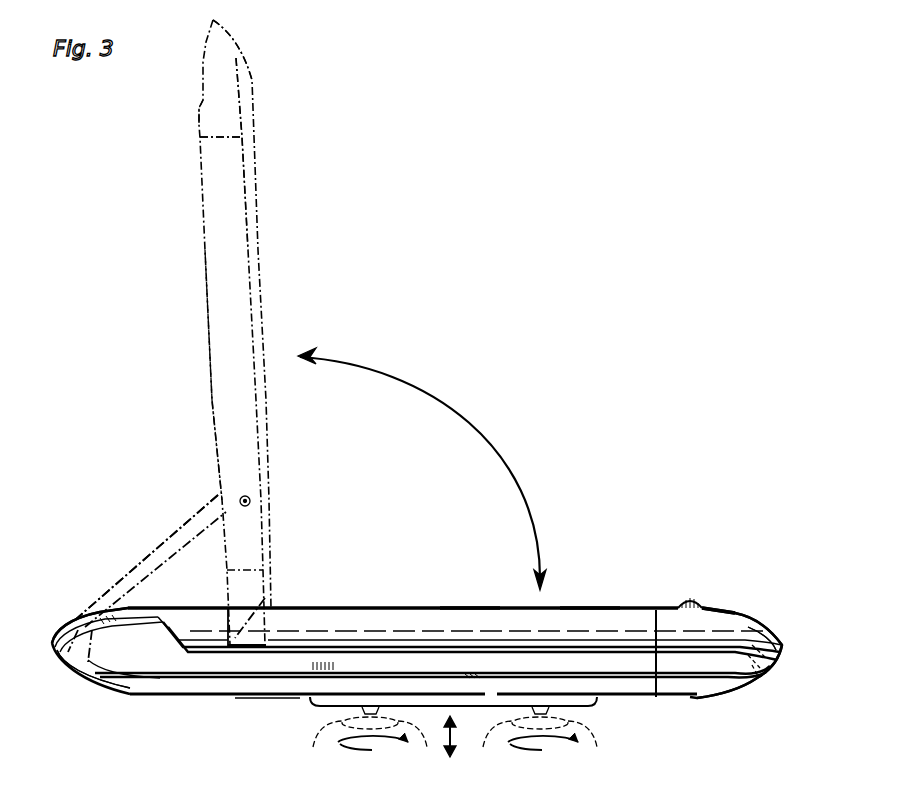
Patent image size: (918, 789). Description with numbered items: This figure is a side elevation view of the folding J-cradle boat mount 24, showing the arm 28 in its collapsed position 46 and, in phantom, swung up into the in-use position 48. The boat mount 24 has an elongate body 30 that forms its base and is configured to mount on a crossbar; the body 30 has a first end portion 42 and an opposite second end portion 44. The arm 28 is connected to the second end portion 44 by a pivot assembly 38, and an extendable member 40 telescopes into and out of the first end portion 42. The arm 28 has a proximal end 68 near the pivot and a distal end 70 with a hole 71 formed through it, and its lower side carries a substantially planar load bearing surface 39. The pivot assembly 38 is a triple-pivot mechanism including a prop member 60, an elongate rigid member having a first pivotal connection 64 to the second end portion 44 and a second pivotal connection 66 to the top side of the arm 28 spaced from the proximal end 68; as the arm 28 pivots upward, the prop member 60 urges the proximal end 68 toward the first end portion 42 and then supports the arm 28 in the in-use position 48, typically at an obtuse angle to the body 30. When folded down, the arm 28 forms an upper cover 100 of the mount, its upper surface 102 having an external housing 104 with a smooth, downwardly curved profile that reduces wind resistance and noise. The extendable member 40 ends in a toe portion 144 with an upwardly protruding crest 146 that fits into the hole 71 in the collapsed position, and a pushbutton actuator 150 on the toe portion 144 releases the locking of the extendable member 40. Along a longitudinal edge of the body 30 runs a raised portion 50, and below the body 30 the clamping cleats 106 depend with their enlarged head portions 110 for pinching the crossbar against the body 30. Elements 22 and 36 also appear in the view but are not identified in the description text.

The vehicle 22 is at (106, 350).
The boat mount 24 is at (96, 393).
The arm 28 is at (206, 226).
The body 30 is at (185, 695).
The stern deck surface 36 is at (712, 607).
The pivot assembly 38 is at (110, 548).
The load bearing surface 39 is at (262, 235).
The extendable member 40 is at (750, 702).
The first end portion 42 is at (660, 712).
The second end portion 44 is at (113, 736).
The collapsed position 46 is at (592, 610).
The in-use position 48 is at (238, 160).
The raised portion 50 is at (455, 741).
The prop member 60 is at (180, 518).
The first pivotal connection 64 is at (80, 620).
The second pivotal connection 66 is at (252, 500).
The proximal end 68 is at (88, 573).
The distal end 70 is at (245, 37).
The hole 71 is at (200, 96).
The upper cover 100 is at (446, 618).
The upper surface 102 is at (210, 330).
The external housing 104 is at (225, 394).
The cleat 106 is at (342, 722).
The head portion 110 is at (453, 756).
The toe portion 144 is at (777, 640).
The crest 146 is at (686, 600).
The actuator 150 is at (768, 676).